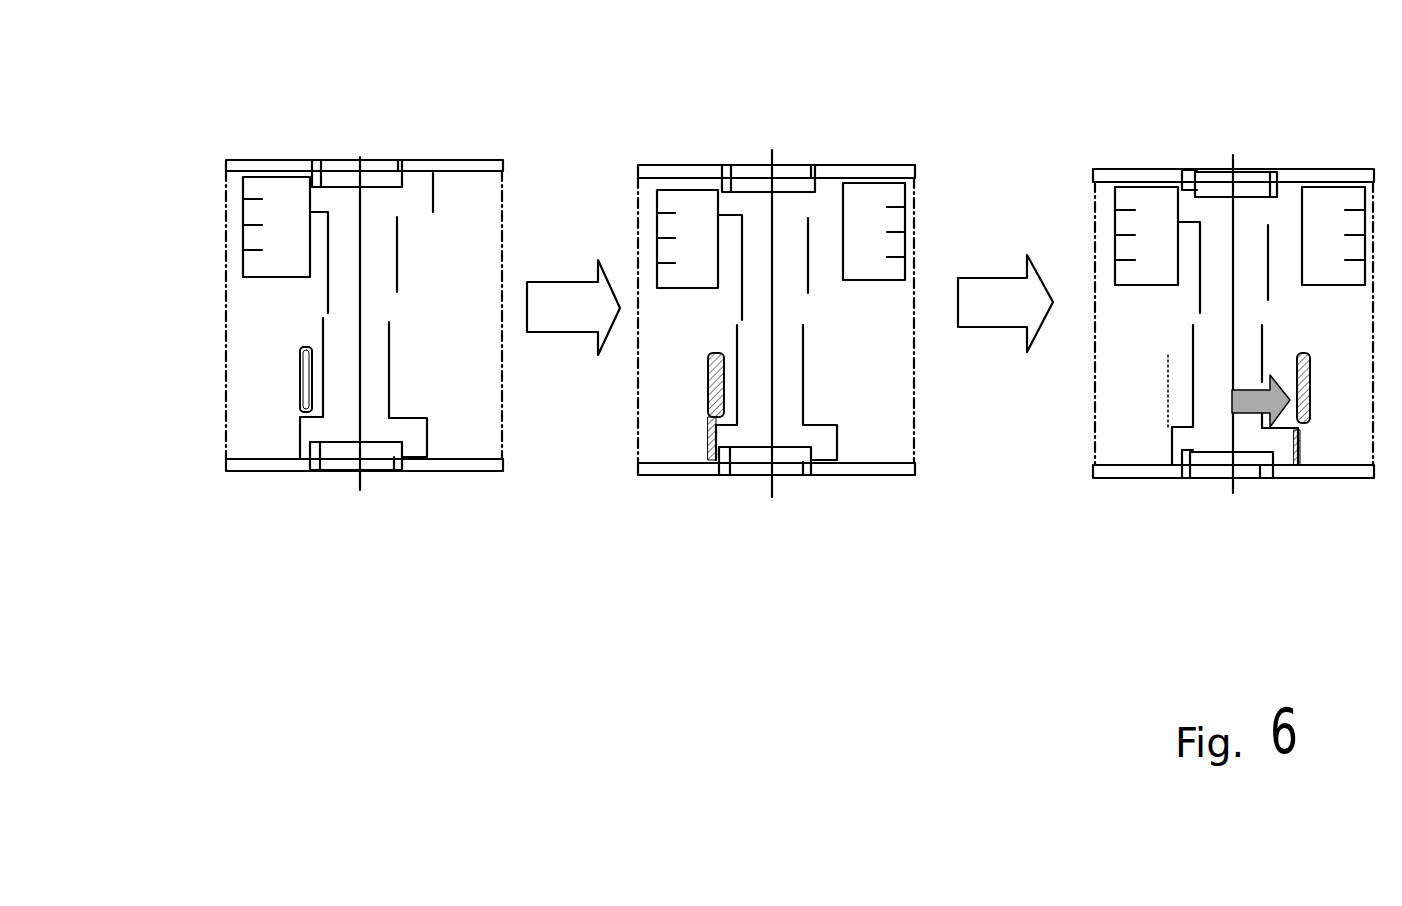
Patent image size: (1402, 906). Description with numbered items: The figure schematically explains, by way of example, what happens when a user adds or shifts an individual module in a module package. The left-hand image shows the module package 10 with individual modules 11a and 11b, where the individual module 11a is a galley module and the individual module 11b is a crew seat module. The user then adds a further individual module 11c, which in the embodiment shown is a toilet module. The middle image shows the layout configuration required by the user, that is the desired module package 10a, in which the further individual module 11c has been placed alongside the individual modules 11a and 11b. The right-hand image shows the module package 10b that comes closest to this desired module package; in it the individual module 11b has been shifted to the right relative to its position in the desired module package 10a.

The module package 10 is at (253, 443).
The desired module package 10a is at (675, 444).
The module package 10b is at (1123, 440).
The individual module 11a is at (243, 265).
The individual module 11b is at (301, 392).
The further individual module 11c is at (880, 180).